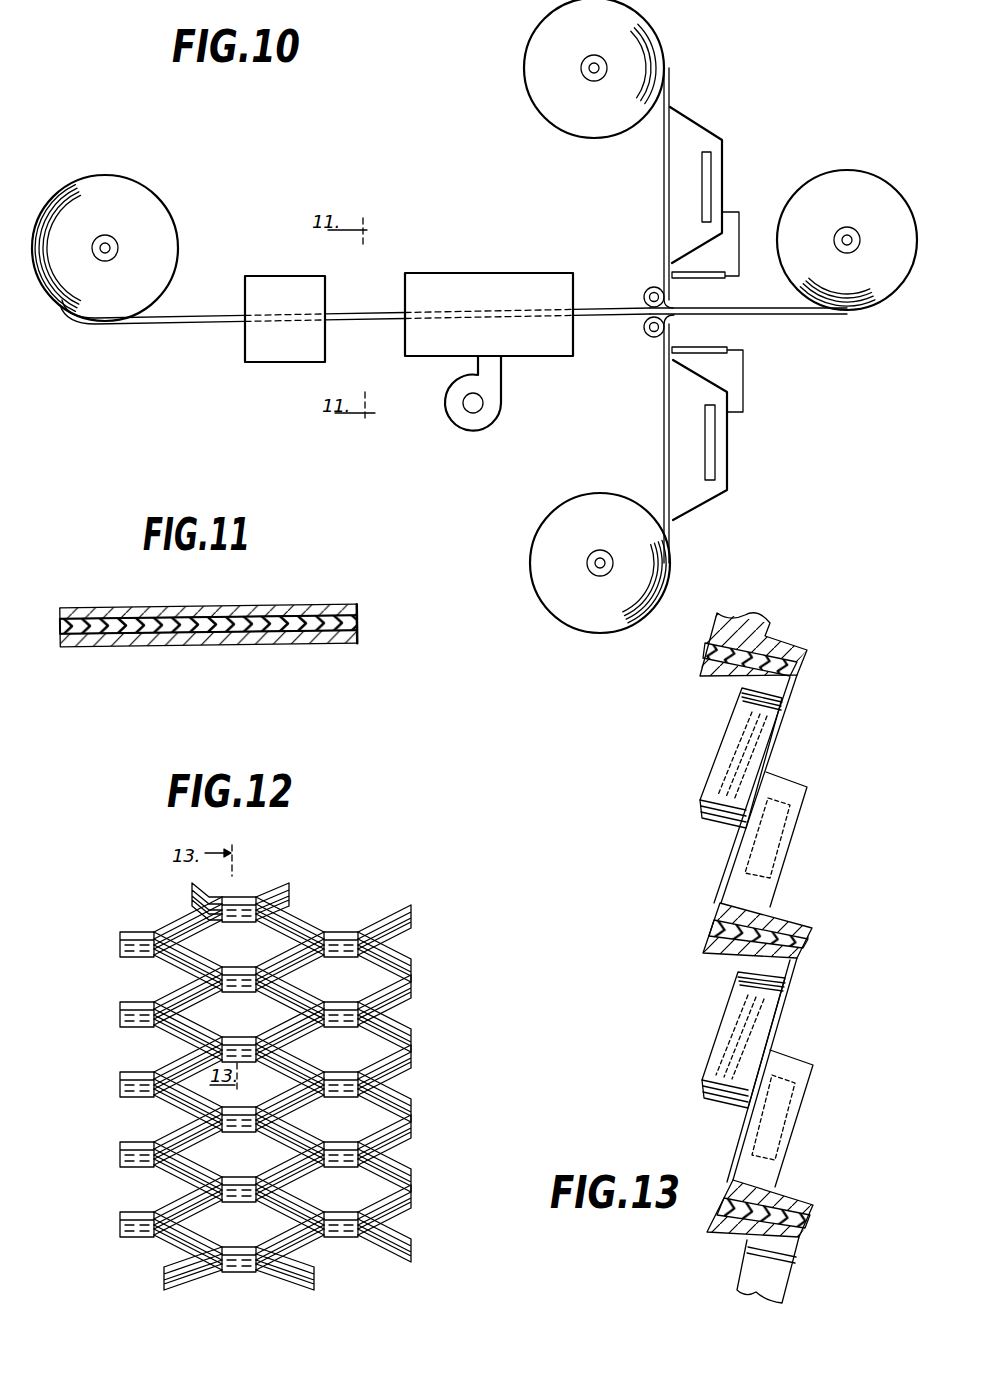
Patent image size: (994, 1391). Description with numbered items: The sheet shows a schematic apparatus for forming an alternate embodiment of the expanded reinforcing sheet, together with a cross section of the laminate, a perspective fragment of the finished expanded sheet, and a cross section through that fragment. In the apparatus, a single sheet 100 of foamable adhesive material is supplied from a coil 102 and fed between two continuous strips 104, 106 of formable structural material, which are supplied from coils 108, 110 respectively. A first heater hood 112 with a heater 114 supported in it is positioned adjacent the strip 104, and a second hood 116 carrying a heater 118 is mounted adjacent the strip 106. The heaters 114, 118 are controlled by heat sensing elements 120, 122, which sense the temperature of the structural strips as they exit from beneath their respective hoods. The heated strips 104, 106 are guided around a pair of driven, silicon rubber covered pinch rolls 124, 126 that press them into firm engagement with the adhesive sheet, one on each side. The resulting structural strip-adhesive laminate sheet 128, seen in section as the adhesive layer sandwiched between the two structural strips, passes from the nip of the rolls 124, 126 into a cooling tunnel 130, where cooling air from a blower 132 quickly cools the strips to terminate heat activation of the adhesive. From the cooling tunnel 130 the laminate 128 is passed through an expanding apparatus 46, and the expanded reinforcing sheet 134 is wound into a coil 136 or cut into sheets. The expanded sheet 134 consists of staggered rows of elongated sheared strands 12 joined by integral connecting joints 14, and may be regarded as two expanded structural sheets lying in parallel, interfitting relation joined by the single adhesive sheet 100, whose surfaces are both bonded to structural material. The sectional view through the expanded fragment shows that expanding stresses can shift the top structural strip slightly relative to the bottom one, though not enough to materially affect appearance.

In FIG. 12, the sheared strands 12 is at (402, 970).
In FIG. 13, the sheared strands 12 is at (705, 790).
In FIG. 12, the connecting joints 14 is at (340, 934).
In FIG. 13, the connecting joints 14 is at (787, 640).
In FIG. 10, the expanding apparatus 46 is at (290, 277).
In FIG. 10, the sheet of foamable adhesive material 100 is at (805, 313).
In FIG. 11, the sheet of foamable adhesive material 100 is at (233, 627).
In FIG. 13, the sheet of foamable adhesive material 100 is at (803, 948).
In FIG. 10, the coil 102 is at (853, 173).
In FIG. 10, the first continuous strip of formable structural material 104 is at (662, 158).
In FIG. 11, the first continuous strip of formable structural material 104 is at (287, 606).
In FIG. 10, the second continuous strip of formable structural material 106 is at (662, 427).
In FIG. 11, the second continuous strip of formable structural material 106 is at (283, 640).
In FIG. 10, the coil 108 is at (644, 40).
In FIG. 10, the coil 110 is at (573, 505).
In FIG. 10, the first heater hood 112 is at (705, 132).
In FIG. 10, the heater 114 is at (707, 163).
In FIG. 10, the second hood 116 is at (713, 502).
In FIG. 10, the heater 118 is at (713, 453).
In FIG. 10, the heat sensing element 120 is at (713, 277).
In FIG. 10, the heat sensing element 122 is at (713, 342).
In FIG. 10, the pinch roll 124 is at (652, 287).
In FIG. 10, the pinch roll 126 is at (650, 335).
In FIG. 10, the structural strip-adhesive laminate sheet 128 is at (343, 313).
In FIG. 11, the structural strip-adhesive laminate sheet 128 is at (322, 600).
In FIG. 10, the cooling tunnel 130 is at (515, 272).
In FIG. 10, the blower 132 is at (490, 408).
In FIG. 10, the expanded reinforcing sheet 134 is at (192, 313).
In FIG. 12, the expanded reinforcing sheet 134 is at (398, 912).
In FIG. 13, the expanded reinforcing sheet 134 is at (701, 930).
In FIG. 10, the coil 136 is at (160, 225).